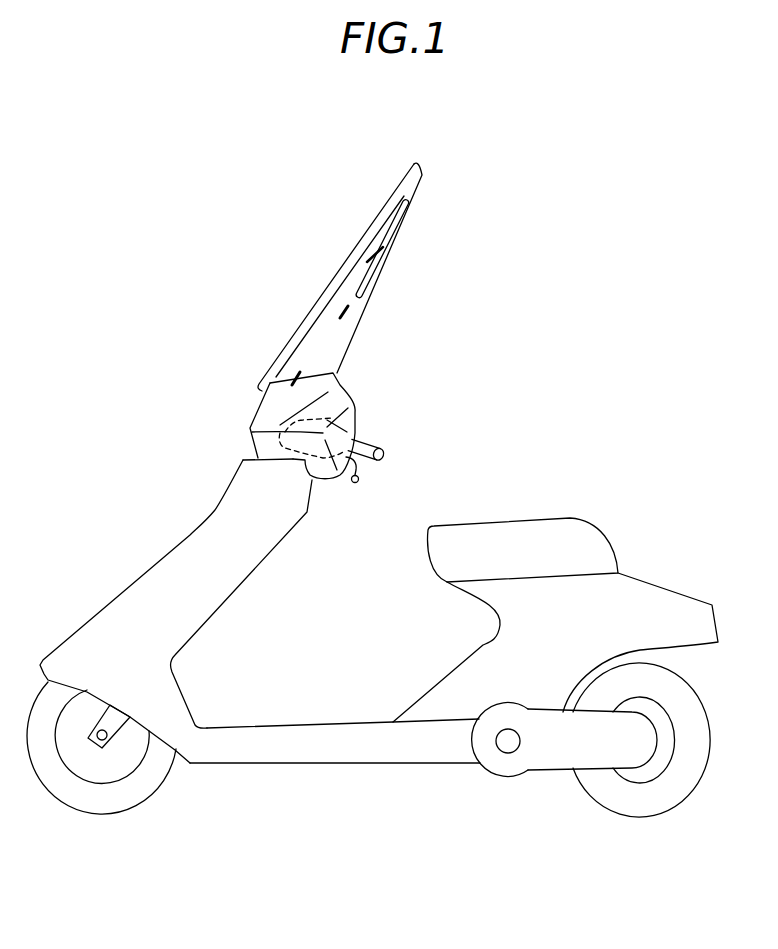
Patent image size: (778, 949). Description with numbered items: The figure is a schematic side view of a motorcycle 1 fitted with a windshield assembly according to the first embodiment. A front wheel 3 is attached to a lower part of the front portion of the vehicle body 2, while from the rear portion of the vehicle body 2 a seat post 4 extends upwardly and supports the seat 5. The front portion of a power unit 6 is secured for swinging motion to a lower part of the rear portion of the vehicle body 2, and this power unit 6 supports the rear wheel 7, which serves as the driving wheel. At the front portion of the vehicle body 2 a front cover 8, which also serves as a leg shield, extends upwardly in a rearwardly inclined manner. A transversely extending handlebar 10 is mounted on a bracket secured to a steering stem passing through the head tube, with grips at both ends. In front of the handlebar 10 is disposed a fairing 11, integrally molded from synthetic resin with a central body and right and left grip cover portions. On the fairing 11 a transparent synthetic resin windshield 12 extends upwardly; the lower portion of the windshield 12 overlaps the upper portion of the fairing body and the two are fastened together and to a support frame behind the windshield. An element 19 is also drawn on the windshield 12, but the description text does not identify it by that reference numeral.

The motorcycle 1 is at (440, 477).
The vehicle body 2 is at (342, 743).
The front wheel 3 is at (120, 793).
The seat post 4 is at (517, 641).
The seat 5 is at (542, 543).
The power unit 6 is at (555, 737).
The rear wheel 7 is at (618, 793).
The front cover 8 is at (218, 532).
The handlebar 10 is at (368, 446).
The fairing 11 is at (273, 408).
The windshield 12 is at (350, 323).
The wiper 19 is at (393, 231).